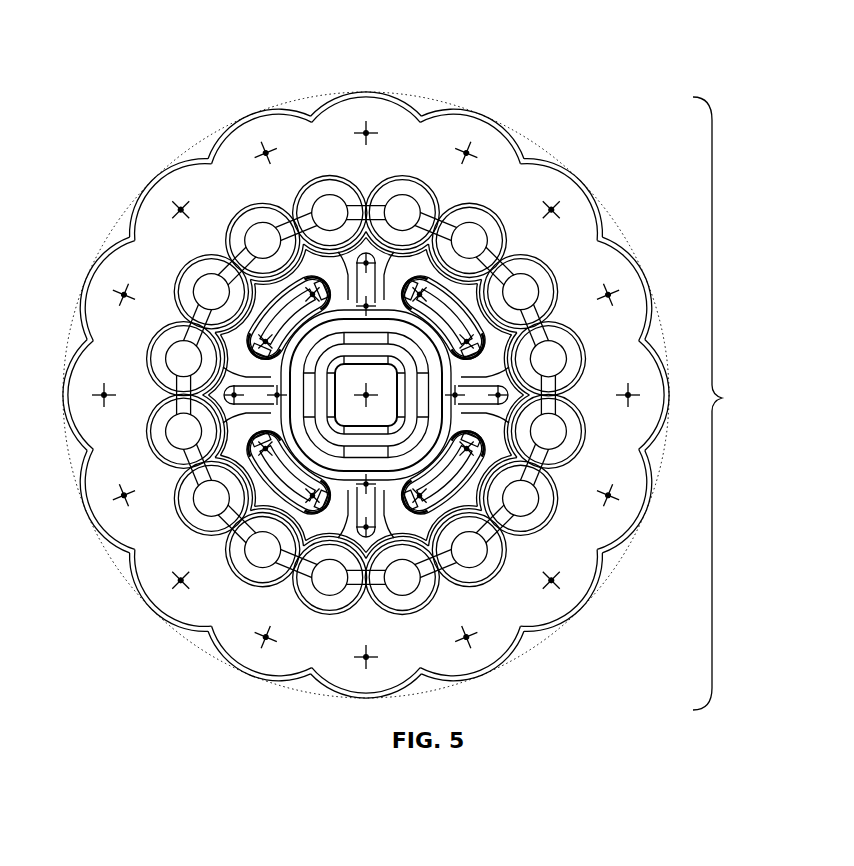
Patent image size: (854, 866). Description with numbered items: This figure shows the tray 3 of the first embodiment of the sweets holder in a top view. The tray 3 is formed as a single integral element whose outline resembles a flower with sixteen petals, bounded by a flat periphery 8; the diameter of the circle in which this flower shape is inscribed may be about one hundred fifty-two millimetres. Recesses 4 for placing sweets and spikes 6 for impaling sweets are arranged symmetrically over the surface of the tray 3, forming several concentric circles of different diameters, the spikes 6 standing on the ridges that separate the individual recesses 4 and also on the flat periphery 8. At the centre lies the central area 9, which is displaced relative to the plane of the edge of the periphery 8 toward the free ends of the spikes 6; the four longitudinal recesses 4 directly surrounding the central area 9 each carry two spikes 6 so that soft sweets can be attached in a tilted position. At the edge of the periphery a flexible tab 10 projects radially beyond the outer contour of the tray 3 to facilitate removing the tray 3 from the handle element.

The tray 3 is at (408, 401).
The recesses 4 is at (437, 470).
The spikes 6 is at (436, 280).
The flat periphery 8 is at (208, 194).
The central area 9 is at (362, 413).
The flexible tab 10 is at (247, 112).